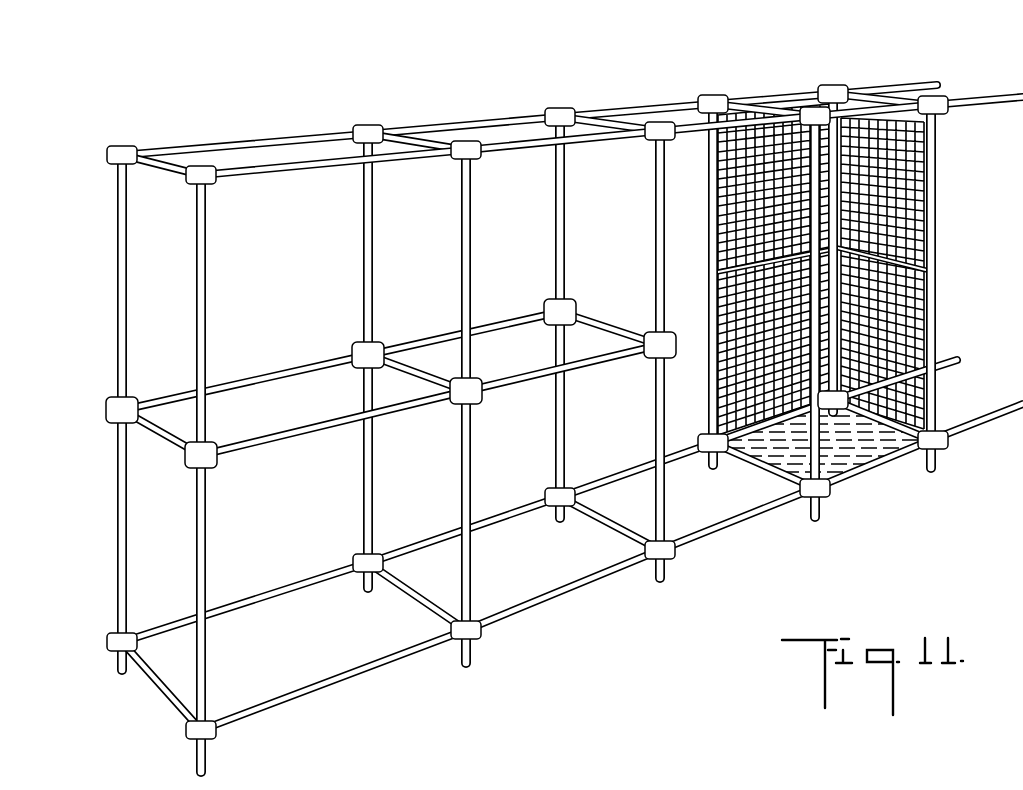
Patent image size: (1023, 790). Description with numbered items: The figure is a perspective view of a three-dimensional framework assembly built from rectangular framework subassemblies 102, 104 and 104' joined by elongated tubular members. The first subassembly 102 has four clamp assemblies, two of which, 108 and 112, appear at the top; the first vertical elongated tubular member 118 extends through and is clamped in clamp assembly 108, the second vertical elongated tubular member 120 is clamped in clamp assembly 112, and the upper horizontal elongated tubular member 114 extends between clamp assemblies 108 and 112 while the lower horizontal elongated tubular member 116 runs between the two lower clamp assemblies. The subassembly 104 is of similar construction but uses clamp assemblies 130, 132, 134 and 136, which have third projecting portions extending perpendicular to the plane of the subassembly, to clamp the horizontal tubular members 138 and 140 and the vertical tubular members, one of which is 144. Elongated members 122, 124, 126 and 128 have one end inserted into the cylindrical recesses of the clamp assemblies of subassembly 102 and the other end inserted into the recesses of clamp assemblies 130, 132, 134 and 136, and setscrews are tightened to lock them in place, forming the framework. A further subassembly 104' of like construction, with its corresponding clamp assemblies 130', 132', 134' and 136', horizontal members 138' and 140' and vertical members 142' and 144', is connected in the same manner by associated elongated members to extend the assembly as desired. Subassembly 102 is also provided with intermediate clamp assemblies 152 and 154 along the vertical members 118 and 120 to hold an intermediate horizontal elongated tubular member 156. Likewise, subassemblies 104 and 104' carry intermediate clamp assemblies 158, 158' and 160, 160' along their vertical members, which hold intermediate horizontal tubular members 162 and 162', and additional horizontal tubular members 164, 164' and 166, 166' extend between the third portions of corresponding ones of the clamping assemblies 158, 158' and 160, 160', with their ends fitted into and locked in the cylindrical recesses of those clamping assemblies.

The framework subassembly 102 is at (253, 429).
The framework subassembly 104 is at (479, 368).
The framework subassembly 104' is at (660, 320).
The clamp assembly 108 is at (208, 186).
The clamp assembly 112 is at (122, 146).
The upper horizontal elongated tubular member 114 is at (164, 168).
The lower horizontal elongated tubular member 116 is at (165, 698).
The first vertical elongated tubular member 118 is at (203, 559).
The second vertical elongated tubular member 120 is at (117, 484).
The elongated member 122 is at (312, 165).
The elongated member 124 is at (281, 708).
The elongated member 126 is at (300, 126).
The elongated member 128 is at (243, 608).
The clamp assembly 130 is at (501, 641).
The front bottom T-connector 130' is at (695, 560).
The clamp assembly 132 is at (491, 167).
The front top T-connector 132' is at (695, 100).
The clamp assembly 134 is at (340, 544).
The rear bottom T-connector 134' is at (540, 481).
The clamp assembly 136 is at (382, 108).
The rear top T-connector 136' is at (569, 93).
The horizontal elongated tubular member 138 is at (420, 112).
The top cross rail 138' is at (616, 96).
The horizontal elongated tubular member 140 is at (402, 596).
The bottom cross rail 140' is at (605, 528).
The front intermediate post 142' is at (630, 354).
The vertical tubular member 144 is at (402, 361).
The rear intermediate post 144' is at (594, 317).
The clamp assembly 152 is at (214, 464).
The clamp assembly 154 is at (113, 408).
The intermediate horizontal elongated tubular member 156 is at (167, 444).
The intermediate clamp assembly 158 is at (439, 412).
The intermediate clamp assembly 158' is at (637, 367).
The intermediate clamp assembly 160 is at (339, 340).
The intermediate clamp assembly 160' is at (532, 292).
The intermediate horizontal tubular member 162 is at (417, 344).
The intermediate horizontal tubular member 162' is at (610, 312).
The additional horizontal tubular member 164 is at (333, 436).
The additional horizontal tubular member 164' is at (563, 388).
The additional horizontal tubular member 166 is at (245, 372).
The additional horizontal tubular member 166' is at (464, 333).